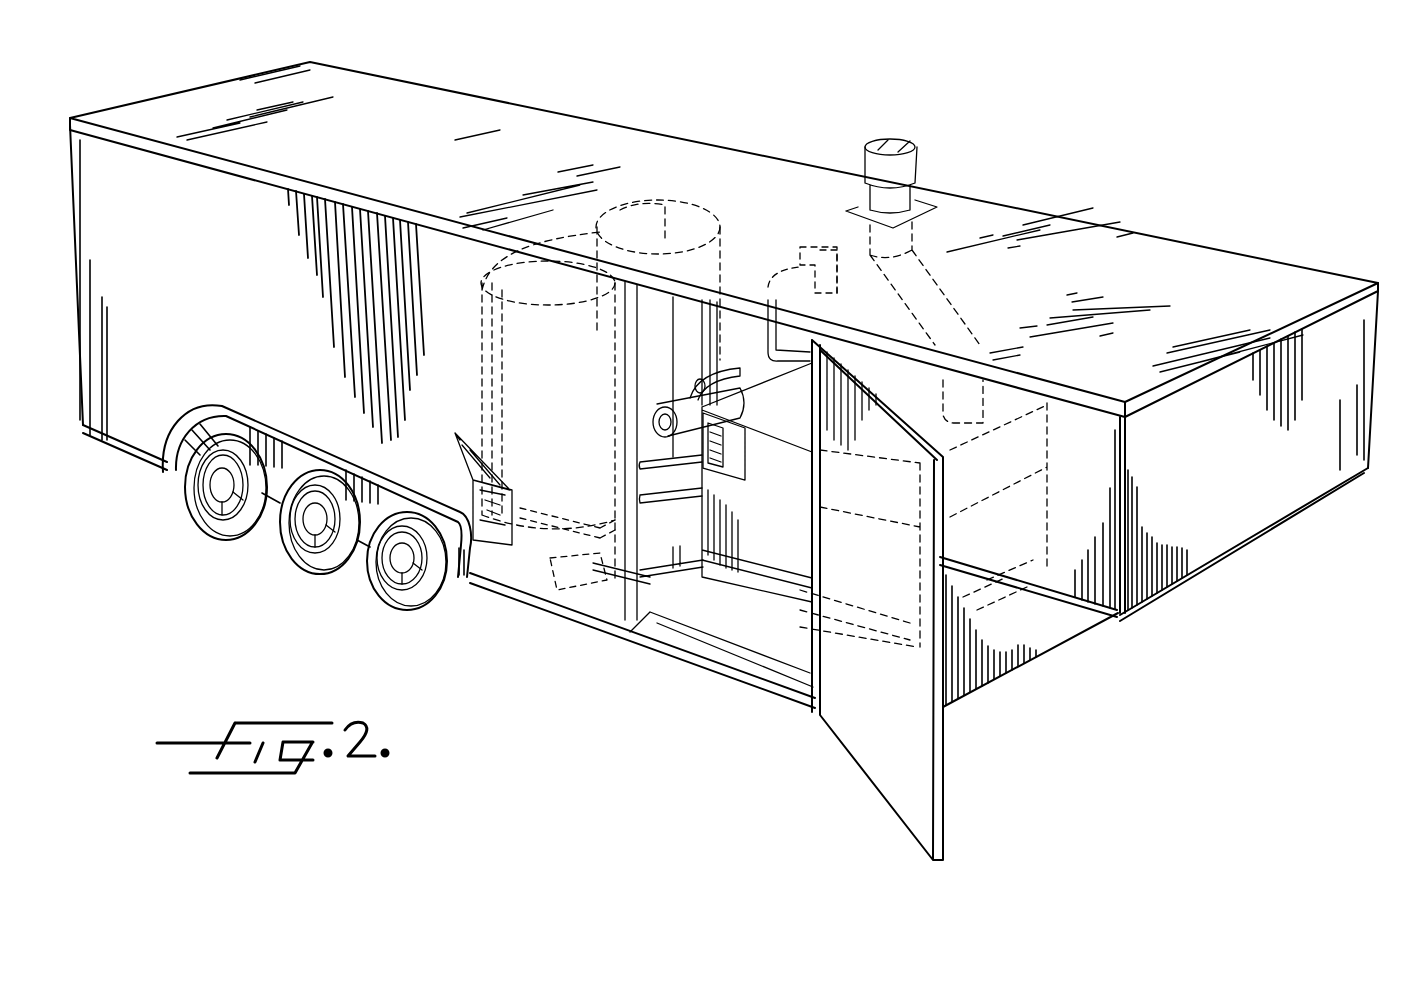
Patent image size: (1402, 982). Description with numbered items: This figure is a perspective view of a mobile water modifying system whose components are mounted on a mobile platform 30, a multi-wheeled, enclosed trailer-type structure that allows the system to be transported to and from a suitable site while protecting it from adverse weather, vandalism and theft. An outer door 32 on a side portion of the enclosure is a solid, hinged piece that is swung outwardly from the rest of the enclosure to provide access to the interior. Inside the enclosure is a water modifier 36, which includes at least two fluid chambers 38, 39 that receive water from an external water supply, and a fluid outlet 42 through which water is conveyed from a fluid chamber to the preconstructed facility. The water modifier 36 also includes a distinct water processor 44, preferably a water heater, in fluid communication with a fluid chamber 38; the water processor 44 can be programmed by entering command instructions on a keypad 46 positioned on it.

The mobile platform 30 is at (1203, 560).
The outer door 32 is at (906, 600).
The water modifier 36 is at (688, 594).
The fluid chamber 38 is at (323, 525).
The fluid chamber 39 is at (692, 212).
The fluid outlet 42 is at (545, 289).
The water processor 44 is at (1015, 545).
The keypad 46 is at (737, 463).